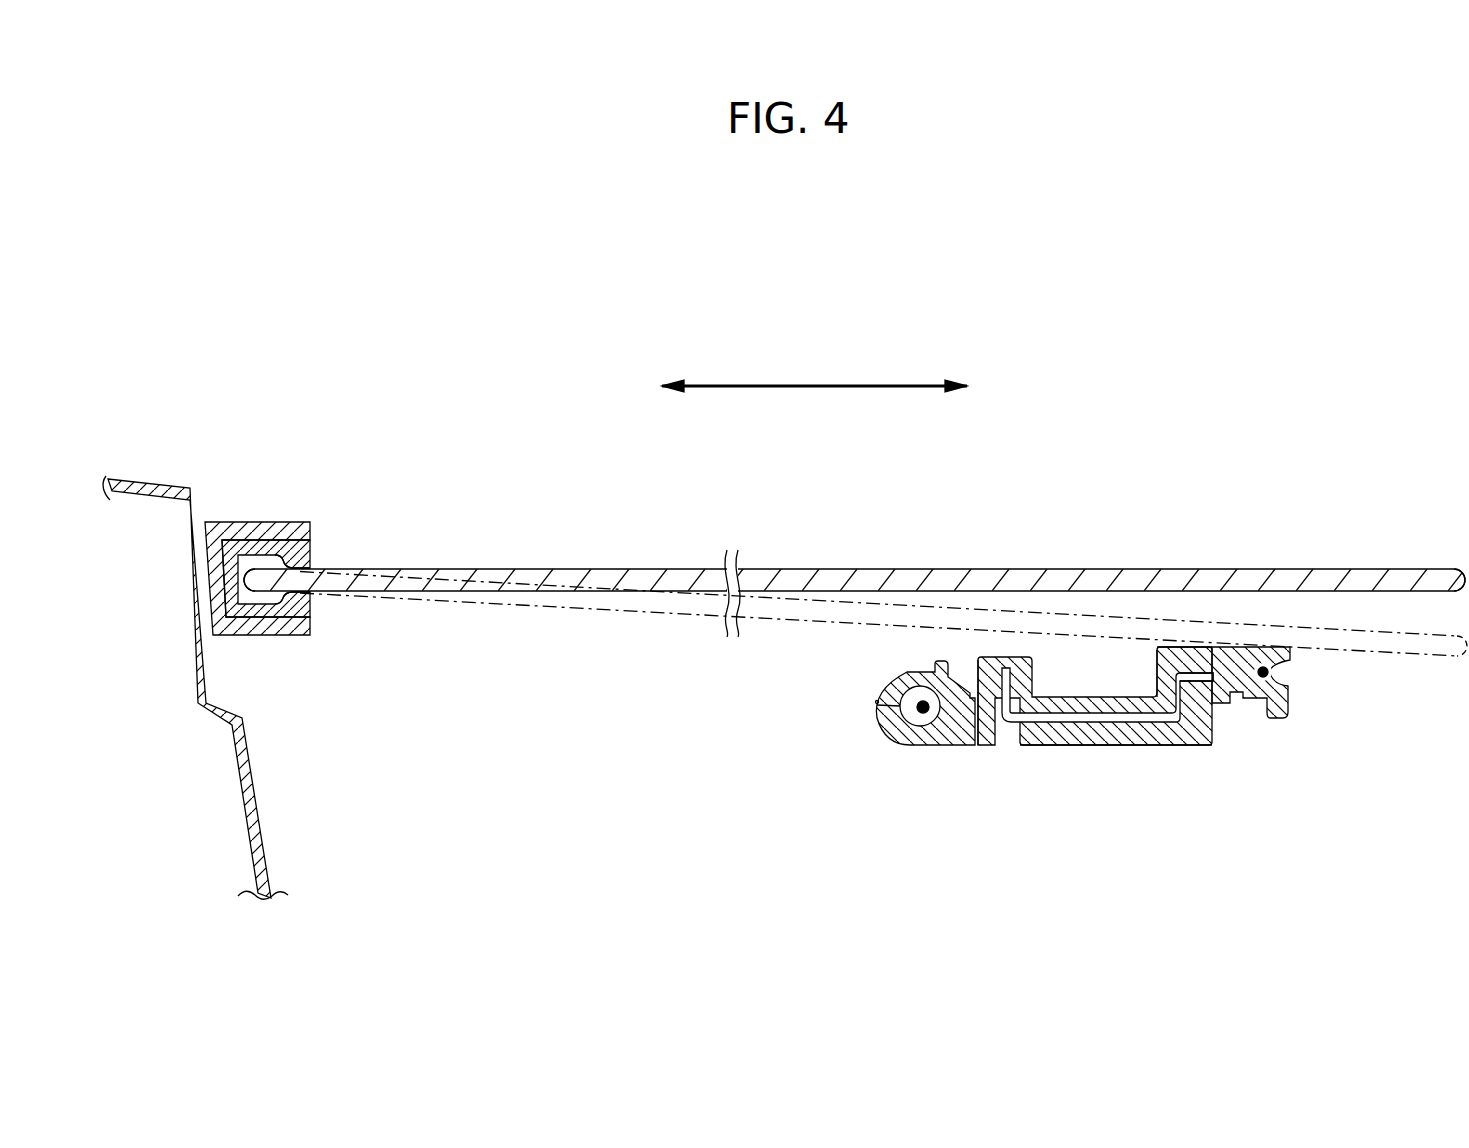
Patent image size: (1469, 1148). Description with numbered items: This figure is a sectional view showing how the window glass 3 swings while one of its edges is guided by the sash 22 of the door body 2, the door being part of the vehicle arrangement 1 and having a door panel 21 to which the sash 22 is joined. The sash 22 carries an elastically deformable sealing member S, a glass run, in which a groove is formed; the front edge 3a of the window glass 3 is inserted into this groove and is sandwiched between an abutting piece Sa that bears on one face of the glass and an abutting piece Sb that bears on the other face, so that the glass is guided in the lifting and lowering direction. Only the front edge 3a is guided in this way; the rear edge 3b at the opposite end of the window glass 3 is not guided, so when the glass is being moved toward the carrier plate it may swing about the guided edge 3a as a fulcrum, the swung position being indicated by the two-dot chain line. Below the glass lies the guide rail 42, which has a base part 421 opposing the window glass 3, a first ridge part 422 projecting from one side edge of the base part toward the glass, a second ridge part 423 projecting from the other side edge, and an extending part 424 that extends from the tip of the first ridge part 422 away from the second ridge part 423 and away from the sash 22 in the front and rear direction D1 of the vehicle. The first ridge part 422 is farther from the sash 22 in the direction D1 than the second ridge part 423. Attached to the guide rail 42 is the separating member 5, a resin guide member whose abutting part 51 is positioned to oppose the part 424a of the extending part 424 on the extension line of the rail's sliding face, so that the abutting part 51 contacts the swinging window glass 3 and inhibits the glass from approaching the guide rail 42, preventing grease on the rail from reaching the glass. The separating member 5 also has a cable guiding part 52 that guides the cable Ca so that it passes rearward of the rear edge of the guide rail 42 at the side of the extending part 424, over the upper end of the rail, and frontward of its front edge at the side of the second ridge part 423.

The apparatus 1 is at (1322, 342).
The door body 2 is at (153, 465).
The door panel 21 is at (190, 567).
The sash 22 is at (240, 522).
The window glass 3 is at (643, 567).
The front edge 3a is at (257, 578).
The rear edge 3b is at (1447, 580).
The sealing member S is at (317, 547).
The abutting piece Sa is at (283, 540).
The abutting piece Sb is at (283, 600).
The separating member 5 is at (1108, 654).
The abutting part 51 is at (1210, 648).
The cable guiding part 52 is at (933, 740).
The guide rail 42 is at (1178, 743).
The base part 421 is at (1078, 718).
The first ridge part 422 is at (1190, 697).
The second ridge part 423 is at (951, 746).
The extending part 424 is at (1217, 705).
The part 424a is at (1277, 663).
The cable Ca is at (875, 702).
The front and rear direction D1 is at (893, 386).